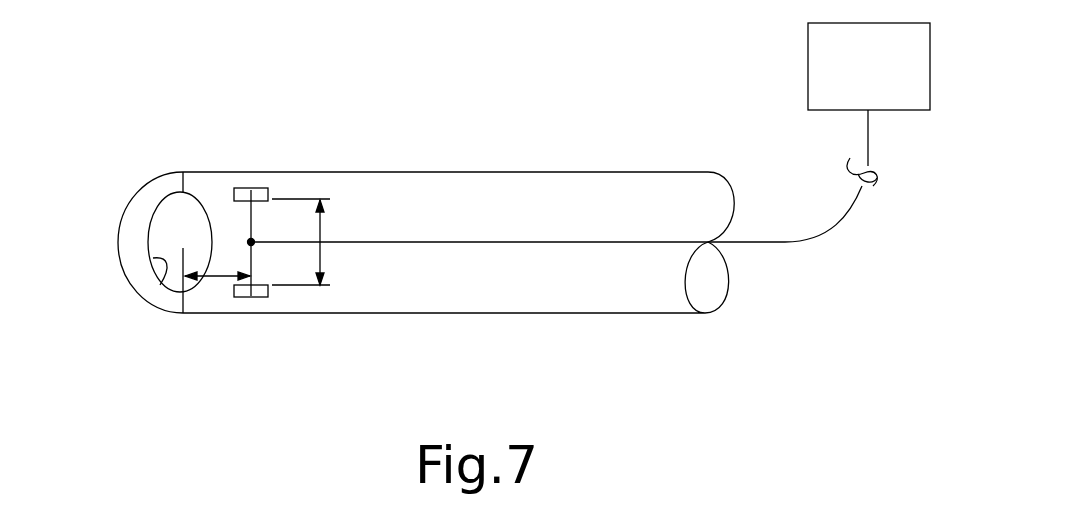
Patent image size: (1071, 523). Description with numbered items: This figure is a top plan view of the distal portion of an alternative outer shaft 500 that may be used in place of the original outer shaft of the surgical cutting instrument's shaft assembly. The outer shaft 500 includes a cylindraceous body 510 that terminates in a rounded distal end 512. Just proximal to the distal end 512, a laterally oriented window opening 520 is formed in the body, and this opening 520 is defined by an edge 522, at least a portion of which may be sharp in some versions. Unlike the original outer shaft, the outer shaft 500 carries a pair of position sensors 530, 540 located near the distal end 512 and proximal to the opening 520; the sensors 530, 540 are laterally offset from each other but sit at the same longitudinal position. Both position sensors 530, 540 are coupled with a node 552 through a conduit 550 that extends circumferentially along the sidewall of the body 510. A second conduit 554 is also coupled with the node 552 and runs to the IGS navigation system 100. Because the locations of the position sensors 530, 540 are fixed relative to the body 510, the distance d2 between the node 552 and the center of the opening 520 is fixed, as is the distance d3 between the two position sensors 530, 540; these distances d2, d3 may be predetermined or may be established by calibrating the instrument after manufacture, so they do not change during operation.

The IGS navigation system 100 is at (842, 85).
The outer shaft 500 is at (570, 95).
The cylindraceous body 510 is at (592, 180).
The rounded distal end 512 is at (132, 243).
The window opening 520 is at (172, 212).
The edge 522 is at (160, 285).
The position sensor 530 is at (262, 188).
The position sensor 540 is at (253, 297).
The conduit 550 is at (250, 204).
The node 552 is at (232, 220).
The conduit 554 is at (582, 242).
The distance d2 is at (217, 278).
The distance d3 is at (321, 240).